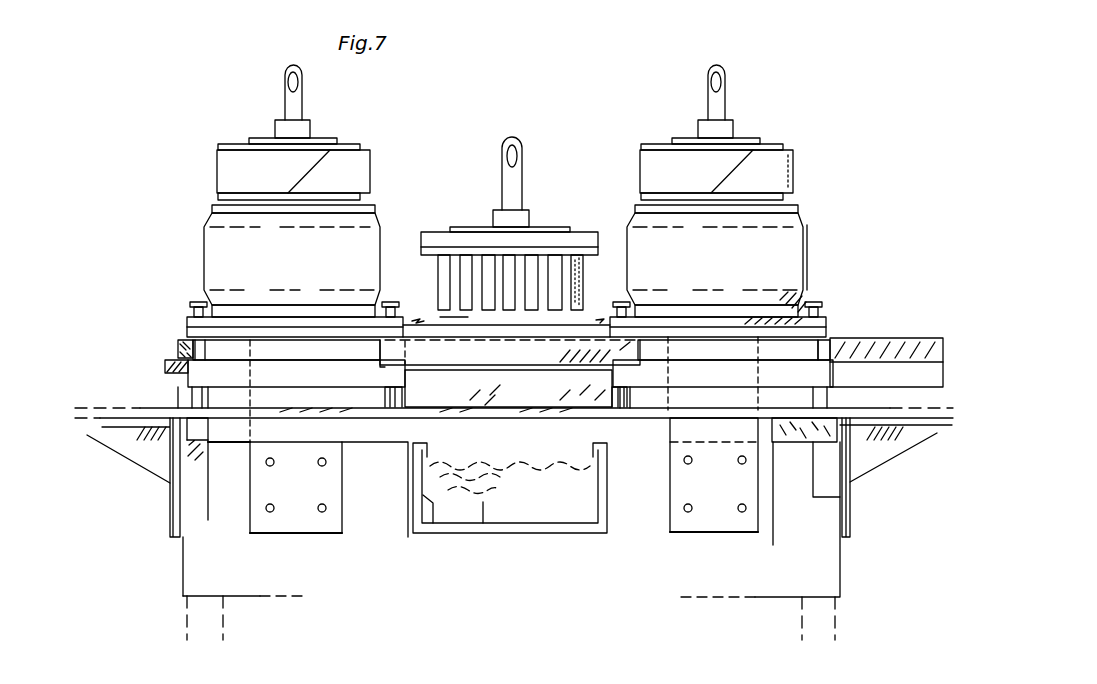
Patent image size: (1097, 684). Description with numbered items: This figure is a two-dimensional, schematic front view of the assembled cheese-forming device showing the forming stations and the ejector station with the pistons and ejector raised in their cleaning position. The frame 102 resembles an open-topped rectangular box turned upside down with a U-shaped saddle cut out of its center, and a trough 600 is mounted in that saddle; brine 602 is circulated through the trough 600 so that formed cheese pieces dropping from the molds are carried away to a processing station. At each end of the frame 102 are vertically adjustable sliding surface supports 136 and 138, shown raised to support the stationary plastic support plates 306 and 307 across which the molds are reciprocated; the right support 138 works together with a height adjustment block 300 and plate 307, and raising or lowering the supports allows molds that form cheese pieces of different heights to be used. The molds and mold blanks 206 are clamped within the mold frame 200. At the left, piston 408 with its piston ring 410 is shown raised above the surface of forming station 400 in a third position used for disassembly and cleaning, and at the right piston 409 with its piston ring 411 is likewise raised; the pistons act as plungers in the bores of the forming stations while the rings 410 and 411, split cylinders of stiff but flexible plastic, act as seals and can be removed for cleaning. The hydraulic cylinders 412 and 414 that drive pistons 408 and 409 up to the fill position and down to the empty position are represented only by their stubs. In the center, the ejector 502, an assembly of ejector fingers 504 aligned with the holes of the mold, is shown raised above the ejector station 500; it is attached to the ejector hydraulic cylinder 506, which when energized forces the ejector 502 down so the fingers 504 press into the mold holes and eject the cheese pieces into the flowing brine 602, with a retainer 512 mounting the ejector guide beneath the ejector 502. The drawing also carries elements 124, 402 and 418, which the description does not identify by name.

The frame 102 is at (220, 539).
The mounting bolts and plate 124 is at (190, 310).
The adjustable sliding surface support 136 is at (170, 463).
The adjustable sliding surface support 138 is at (848, 460).
The mold frame 200 is at (165, 363).
The mold blank 206 is at (187, 338).
The height adjustment block 300 is at (813, 497).
The stationary plastic support plate 306 is at (210, 523).
The stationary plastic support plate 307 is at (773, 545).
The forming station 400 is at (203, 247).
The second motor housing 402 is at (807, 247).
The piston 408 is at (237, 142).
The piston 409 is at (773, 140).
The piston ring 410 is at (215, 163).
The piston ring 411 is at (797, 168).
The hydraulic cylinder 412 is at (285, 95).
The hydraulic cylinder 414 is at (725, 93).
The gasket 418 is at (800, 308).
The ejector station 500 is at (432, 312).
The ejector 502 is at (509, 169).
The ejector fingers 504 is at (592, 278).
The ejector hydraulic cylinder 506 is at (507, 152).
The retainer 512 is at (385, 367).
The trough 600 is at (433, 533).
The brine 602 is at (483, 502).